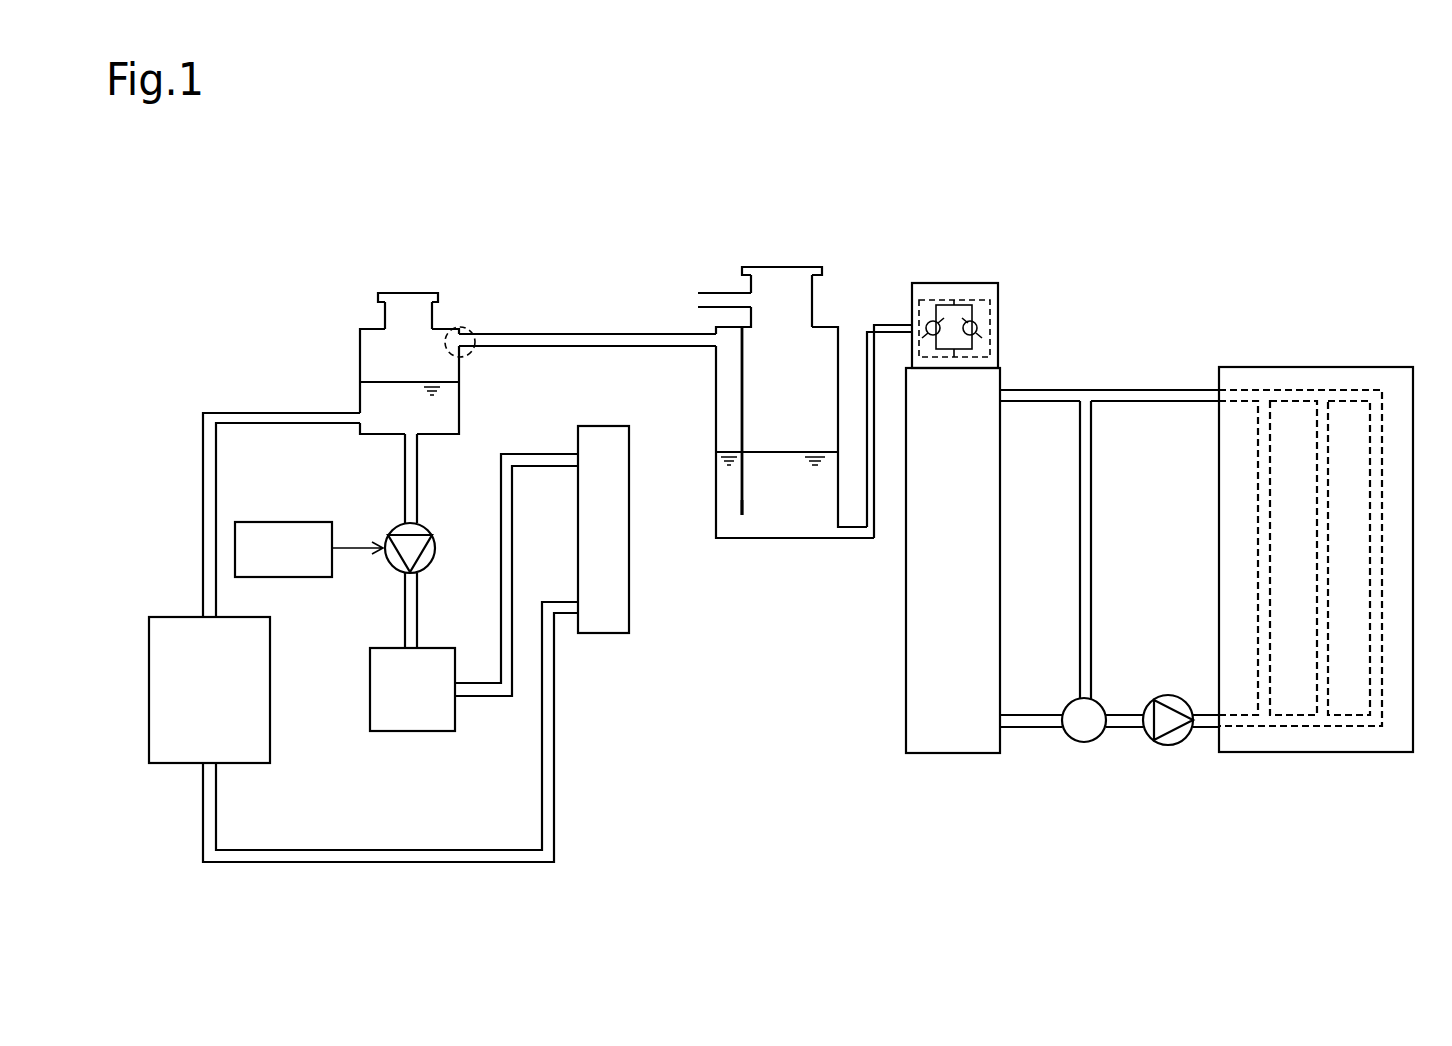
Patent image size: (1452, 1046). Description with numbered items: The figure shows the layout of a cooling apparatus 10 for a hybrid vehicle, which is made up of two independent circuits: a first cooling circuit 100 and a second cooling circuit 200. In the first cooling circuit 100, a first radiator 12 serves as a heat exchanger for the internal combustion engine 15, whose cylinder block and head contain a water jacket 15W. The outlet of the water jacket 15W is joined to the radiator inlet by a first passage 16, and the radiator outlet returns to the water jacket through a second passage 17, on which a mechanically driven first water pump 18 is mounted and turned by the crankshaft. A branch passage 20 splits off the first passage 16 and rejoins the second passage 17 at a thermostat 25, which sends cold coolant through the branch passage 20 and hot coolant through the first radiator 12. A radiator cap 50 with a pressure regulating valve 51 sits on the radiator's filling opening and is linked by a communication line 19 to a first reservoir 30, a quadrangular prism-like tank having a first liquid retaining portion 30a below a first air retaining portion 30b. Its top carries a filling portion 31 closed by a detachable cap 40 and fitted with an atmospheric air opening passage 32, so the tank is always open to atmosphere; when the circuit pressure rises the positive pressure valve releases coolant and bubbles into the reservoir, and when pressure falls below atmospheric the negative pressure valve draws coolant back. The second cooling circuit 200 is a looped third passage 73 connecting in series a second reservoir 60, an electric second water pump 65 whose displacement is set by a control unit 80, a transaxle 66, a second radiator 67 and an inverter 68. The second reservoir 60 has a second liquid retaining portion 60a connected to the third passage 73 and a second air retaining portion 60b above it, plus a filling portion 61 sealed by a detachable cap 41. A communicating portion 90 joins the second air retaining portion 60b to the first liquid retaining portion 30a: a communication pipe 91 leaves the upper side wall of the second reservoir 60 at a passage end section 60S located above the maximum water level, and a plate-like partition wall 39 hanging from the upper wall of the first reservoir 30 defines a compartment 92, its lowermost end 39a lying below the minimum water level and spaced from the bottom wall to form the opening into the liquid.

The cooling apparatus 10 is at (633, 218).
The first cooling circuit 100 is at (1095, 312).
The second cooling circuit 200 is at (268, 380).
The first radiator 12 is at (1002, 558).
The internal combustion engine 15 is at (1302, 753).
The water jacket 15W is at (1358, 727).
The first passage 16 is at (1060, 388).
The second passage 17 is at (1032, 728).
The first water pump 18 is at (1163, 695).
The communication line 19 is at (855, 540).
The branch passage 20 is at (1092, 547).
The thermostat 25 is at (1083, 743).
The first reservoir 30 is at (716, 503).
The first liquid retaining portion 30a is at (815, 507).
The first air retaining portion 30b is at (733, 400).
The filling portion 31 is at (813, 300).
The atmospheric air opening passage 32 is at (725, 293).
The partition wall 39 is at (745, 372).
The lowermost end 39a is at (742, 512).
The detachable cap 40 is at (778, 266).
The detachable cap 41 is at (408, 292).
The radiator cap 50 is at (955, 283).
The pressure regulating valve 51 is at (990, 306).
The second reservoir 60 is at (360, 362).
The second liquid retaining portion 60a is at (443, 410).
The second air retaining portion 60b is at (445, 364).
The passage end section 60S is at (470, 325).
The filling portion 61 is at (384, 310).
The second water pump 65 is at (437, 550).
The transaxle 66 is at (413, 733).
The second radiator 67 is at (602, 637).
The inverter 68 is at (175, 765).
The third passage 73 is at (405, 474).
The control unit 80 is at (283, 520).
The communicating portion 90 is at (697, 383).
The communication pipe 91 is at (620, 348).
The compartment 92 is at (732, 352).